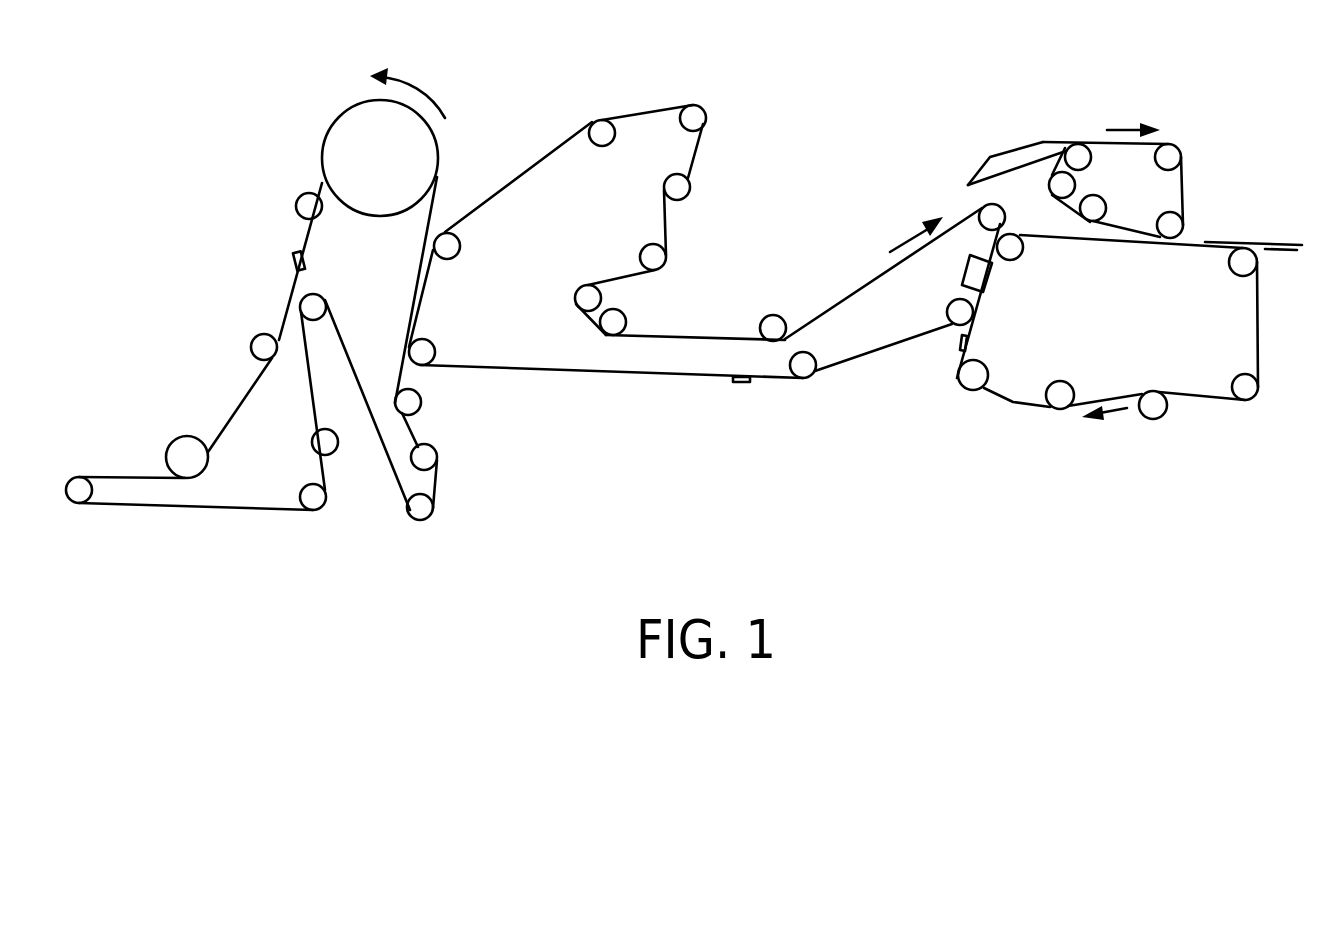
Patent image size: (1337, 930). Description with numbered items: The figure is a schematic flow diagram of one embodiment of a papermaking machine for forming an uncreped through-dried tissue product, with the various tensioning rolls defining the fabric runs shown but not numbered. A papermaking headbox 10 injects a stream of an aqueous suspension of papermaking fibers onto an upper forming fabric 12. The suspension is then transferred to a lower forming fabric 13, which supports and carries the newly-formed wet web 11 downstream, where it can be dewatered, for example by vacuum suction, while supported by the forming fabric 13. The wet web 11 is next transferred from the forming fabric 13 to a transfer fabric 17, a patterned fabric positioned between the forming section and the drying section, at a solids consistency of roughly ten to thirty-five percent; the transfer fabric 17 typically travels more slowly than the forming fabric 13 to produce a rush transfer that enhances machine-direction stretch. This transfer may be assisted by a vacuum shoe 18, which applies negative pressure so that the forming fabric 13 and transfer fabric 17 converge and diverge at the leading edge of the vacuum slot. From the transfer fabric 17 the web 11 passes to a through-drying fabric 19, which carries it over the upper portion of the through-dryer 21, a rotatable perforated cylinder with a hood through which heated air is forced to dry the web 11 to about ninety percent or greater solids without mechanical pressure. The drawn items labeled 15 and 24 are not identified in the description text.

The papermaking headbox 10 is at (1022, 150).
The wet web 11 is at (742, 384).
The upper forming fabric 12 is at (1187, 183).
The lower forming fabric 13 is at (1013, 418).
The sensor 15 is at (298, 260).
The transfer fabric 17 is at (713, 338).
The vacuum shoe 18 is at (977, 268).
The through-drying fabric 19 is at (421, 432).
The through-dryer 21 is at (342, 133).
The press section belt loop 24 is at (288, 305).